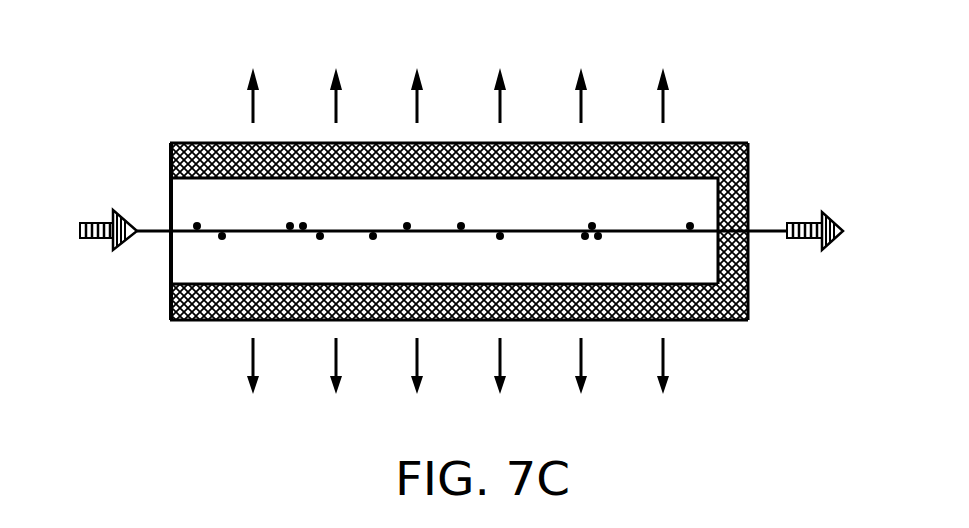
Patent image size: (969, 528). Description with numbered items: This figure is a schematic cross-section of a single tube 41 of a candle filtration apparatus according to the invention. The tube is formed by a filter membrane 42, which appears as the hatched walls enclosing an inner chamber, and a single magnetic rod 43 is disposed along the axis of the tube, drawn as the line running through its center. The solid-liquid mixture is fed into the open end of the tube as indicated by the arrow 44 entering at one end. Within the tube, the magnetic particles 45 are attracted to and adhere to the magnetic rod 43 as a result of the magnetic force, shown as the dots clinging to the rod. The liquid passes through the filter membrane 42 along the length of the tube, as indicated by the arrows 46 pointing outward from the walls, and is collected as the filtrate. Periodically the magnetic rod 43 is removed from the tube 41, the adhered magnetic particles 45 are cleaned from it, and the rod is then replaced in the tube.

The single tube 41 is at (203, 320).
The filter membrane 42 is at (202, 143).
The magnetic rod 43 is at (660, 231).
The arrow indicating feed of solid-liquid mixture 44 is at (108, 222).
The magnetic particles 45 is at (222, 238).
The arrows indicating liquid passing through the filter membrane 46 is at (338, 105).